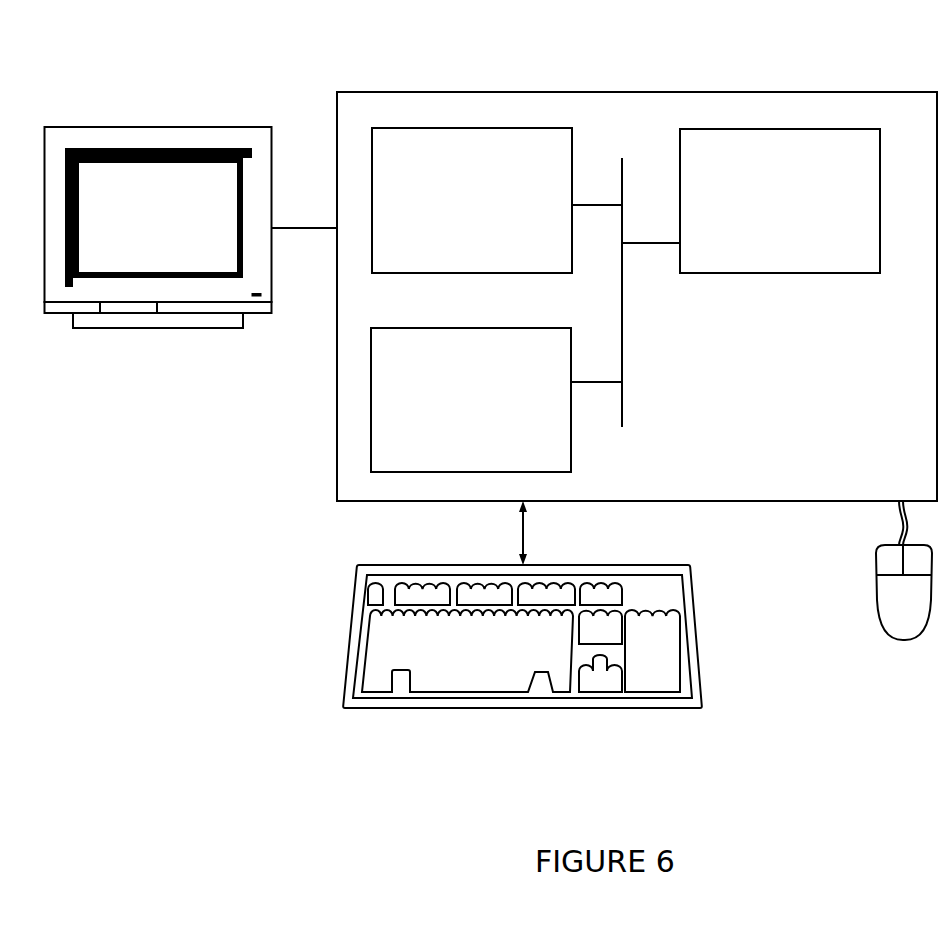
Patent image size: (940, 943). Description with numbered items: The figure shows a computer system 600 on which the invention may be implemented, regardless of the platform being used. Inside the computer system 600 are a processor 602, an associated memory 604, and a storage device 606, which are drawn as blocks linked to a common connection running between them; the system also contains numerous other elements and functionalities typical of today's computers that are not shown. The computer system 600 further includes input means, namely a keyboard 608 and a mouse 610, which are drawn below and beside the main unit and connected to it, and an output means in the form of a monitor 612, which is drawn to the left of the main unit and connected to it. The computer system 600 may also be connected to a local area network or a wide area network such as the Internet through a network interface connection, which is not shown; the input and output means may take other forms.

The computer system 600 is at (668, 46).
The processor 602 is at (780, 201).
The associated memory 604 is at (472, 200).
The storage device 606 is at (471, 400).
The keyboard 608 is at (522, 636).
The mouse 610 is at (904, 570).
The monitor 612 is at (158, 227).